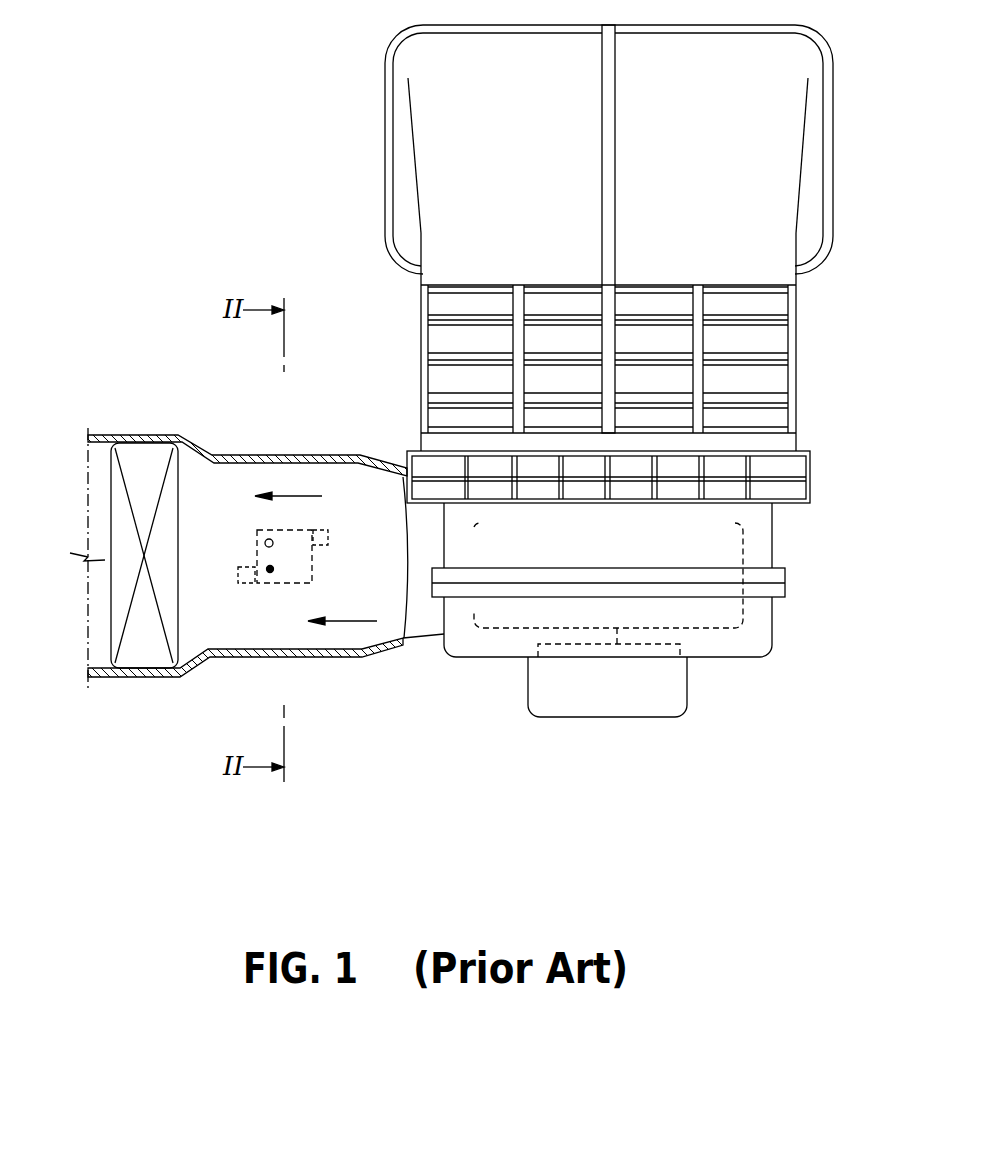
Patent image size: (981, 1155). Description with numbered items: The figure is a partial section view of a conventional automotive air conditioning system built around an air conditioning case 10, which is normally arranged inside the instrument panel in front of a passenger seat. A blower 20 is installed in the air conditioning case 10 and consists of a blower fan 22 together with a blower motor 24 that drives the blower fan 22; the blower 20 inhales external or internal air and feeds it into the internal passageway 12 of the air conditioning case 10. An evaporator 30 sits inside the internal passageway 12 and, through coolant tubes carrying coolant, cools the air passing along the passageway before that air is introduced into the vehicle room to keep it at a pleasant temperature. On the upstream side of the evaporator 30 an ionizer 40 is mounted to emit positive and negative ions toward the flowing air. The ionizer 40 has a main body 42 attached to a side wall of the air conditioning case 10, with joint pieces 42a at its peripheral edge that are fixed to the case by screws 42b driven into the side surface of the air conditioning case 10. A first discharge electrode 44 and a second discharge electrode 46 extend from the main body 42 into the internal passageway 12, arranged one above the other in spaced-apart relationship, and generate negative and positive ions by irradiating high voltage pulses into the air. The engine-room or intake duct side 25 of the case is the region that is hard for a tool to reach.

The air conditioning case 10 is at (416, 665).
The internal passageway 12 is at (376, 587).
The blower 20 is at (565, 797).
The blower fan 22 is at (482, 630).
The blower motor 24 is at (570, 646).
The intake duct side 25 is at (388, 181).
The evaporator 30 is at (152, 660).
The ionizer 40 is at (220, 528).
The main body 42 is at (297, 530).
The joint pieces 42a is at (328, 537).
The screws 42b is at (320, 530).
The first discharge electrode 44 is at (265, 543).
The second discharge electrode 46 is at (272, 575).